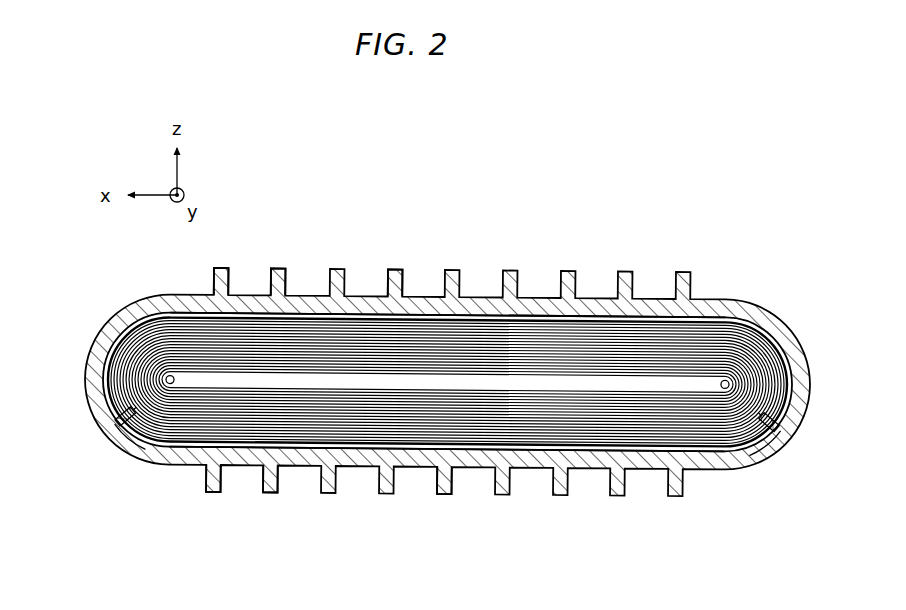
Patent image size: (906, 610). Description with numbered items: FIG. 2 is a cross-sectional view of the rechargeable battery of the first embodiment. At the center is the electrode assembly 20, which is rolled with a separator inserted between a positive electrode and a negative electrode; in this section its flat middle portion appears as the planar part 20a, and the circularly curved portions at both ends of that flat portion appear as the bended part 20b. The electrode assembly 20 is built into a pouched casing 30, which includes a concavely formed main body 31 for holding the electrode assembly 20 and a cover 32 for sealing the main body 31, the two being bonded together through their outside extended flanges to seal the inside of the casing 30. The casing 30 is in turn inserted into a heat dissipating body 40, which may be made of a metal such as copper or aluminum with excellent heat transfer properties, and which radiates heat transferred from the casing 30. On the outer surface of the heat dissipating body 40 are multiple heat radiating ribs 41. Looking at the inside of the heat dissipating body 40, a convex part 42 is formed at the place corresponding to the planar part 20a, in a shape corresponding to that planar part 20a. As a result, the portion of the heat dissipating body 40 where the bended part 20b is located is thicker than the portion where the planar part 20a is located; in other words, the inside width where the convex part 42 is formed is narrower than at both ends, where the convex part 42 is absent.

The electrode assembly 20 is at (439, 382).
The planar part 20a is at (363, 405).
The bended part 20b is at (160, 418).
The pouched casing 30 is at (104, 421).
The main body 31 is at (362, 318).
The cover 32 is at (418, 450).
The heat dissipating body 40 is at (124, 296).
The heat radiating ribs 41 is at (277, 269).
The convex part 42 is at (417, 315).